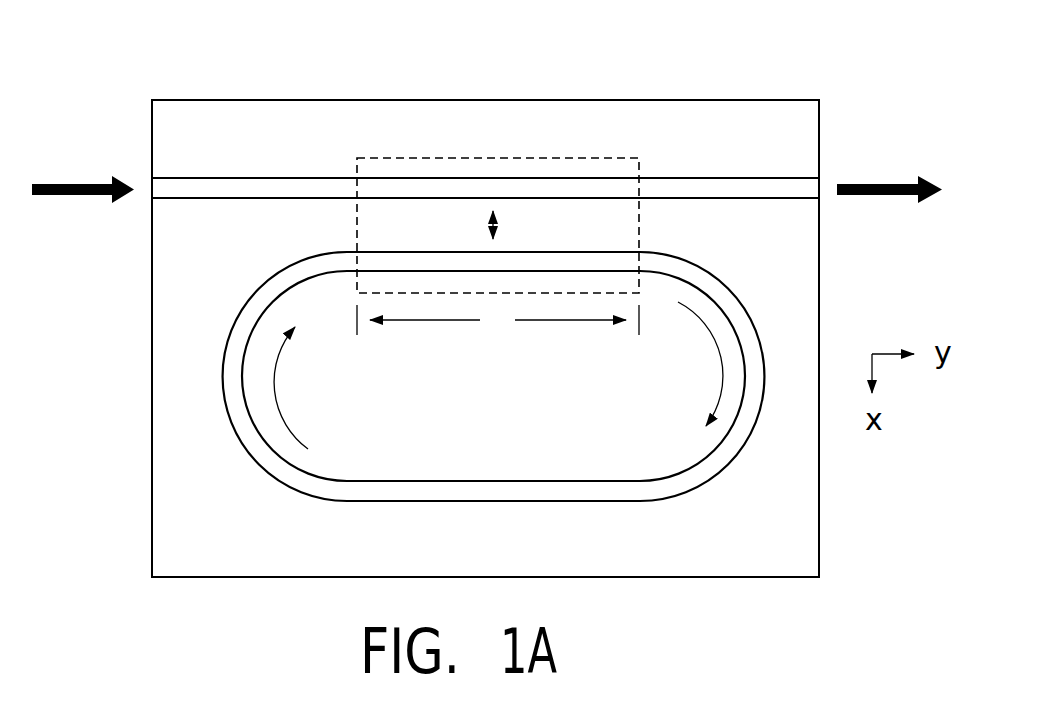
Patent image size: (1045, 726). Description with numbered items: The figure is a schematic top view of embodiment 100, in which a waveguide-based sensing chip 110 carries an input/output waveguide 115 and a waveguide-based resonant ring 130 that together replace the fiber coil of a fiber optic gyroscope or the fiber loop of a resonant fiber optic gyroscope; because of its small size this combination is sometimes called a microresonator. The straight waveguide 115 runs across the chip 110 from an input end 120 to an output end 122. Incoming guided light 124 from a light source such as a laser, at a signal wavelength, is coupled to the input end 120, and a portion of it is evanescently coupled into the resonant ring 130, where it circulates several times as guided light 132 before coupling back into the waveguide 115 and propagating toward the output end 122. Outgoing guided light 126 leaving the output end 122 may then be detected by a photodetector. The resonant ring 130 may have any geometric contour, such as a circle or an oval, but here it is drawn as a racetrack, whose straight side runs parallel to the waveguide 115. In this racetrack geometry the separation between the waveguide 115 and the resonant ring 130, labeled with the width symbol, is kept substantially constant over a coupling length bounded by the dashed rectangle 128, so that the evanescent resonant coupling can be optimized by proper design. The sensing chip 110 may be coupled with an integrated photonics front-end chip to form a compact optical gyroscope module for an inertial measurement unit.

The embodiment 100 is at (825, 32).
The waveguide-based sensing chip 110 is at (670, 100).
The input/output waveguide 115 is at (261, 178).
The input end 120 is at (176, 178).
The output end 122 is at (790, 178).
The incoming guided light 124 is at (68, 197).
The outgoing guided light 126 is at (878, 197).
The dashed rectangle 128 is at (520, 158).
The waveguide-based resonant ring 130 is at (683, 495).
The guided light 132 is at (265, 387).